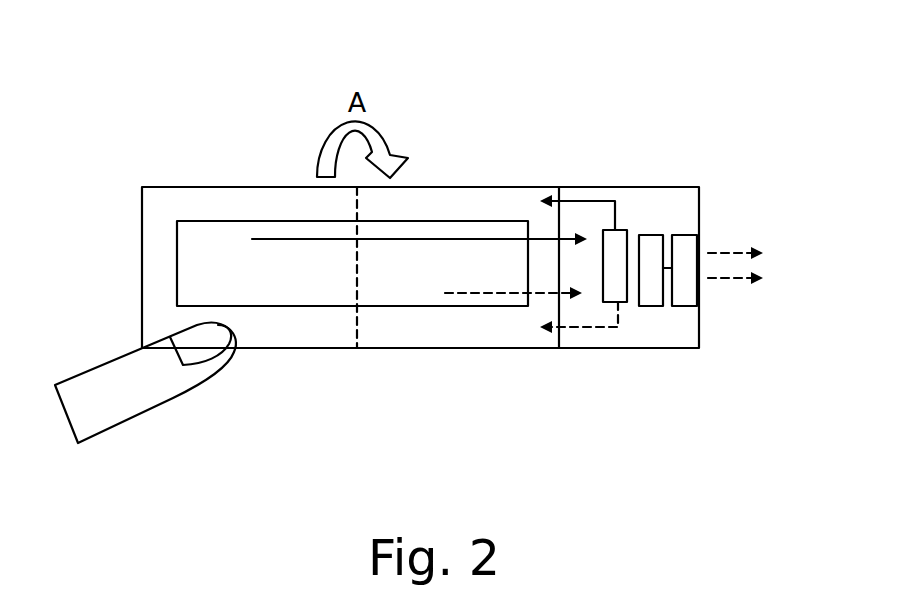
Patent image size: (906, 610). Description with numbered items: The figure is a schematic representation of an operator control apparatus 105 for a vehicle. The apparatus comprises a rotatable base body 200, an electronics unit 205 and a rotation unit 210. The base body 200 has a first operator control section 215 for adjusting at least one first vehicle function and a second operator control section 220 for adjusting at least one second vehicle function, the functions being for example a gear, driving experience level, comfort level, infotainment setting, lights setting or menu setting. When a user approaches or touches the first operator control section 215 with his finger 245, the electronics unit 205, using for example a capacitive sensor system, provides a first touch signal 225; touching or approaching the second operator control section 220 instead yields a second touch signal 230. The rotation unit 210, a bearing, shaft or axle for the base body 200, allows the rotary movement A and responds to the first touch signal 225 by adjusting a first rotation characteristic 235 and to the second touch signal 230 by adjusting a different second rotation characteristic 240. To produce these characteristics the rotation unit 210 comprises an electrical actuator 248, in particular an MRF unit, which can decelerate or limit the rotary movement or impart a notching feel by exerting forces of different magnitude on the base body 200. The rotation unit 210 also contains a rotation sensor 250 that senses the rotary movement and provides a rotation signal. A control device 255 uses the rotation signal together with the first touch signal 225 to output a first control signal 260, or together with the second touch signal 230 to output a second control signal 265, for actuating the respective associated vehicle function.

The operator control apparatus 105 is at (170, 68).
The rotatable base body 200 is at (185, 190).
The electronics unit 205 is at (319, 293).
The rotation unit 210 is at (686, 187).
The first operator control section 215 is at (252, 358).
The second operator control section 220 is at (455, 358).
The first touch signal 225 is at (273, 238).
The second touch signal 230 is at (494, 293).
The first rotation characteristic 235 is at (589, 195).
The second rotation characteristic 240 is at (587, 333).
The finger 245 is at (126, 414).
The electrical actuator 248 is at (623, 231).
The rotation sensor 250 is at (648, 298).
The control device 255 is at (688, 305).
The first control signal 260 is at (740, 252).
The second control signal 265 is at (740, 280).